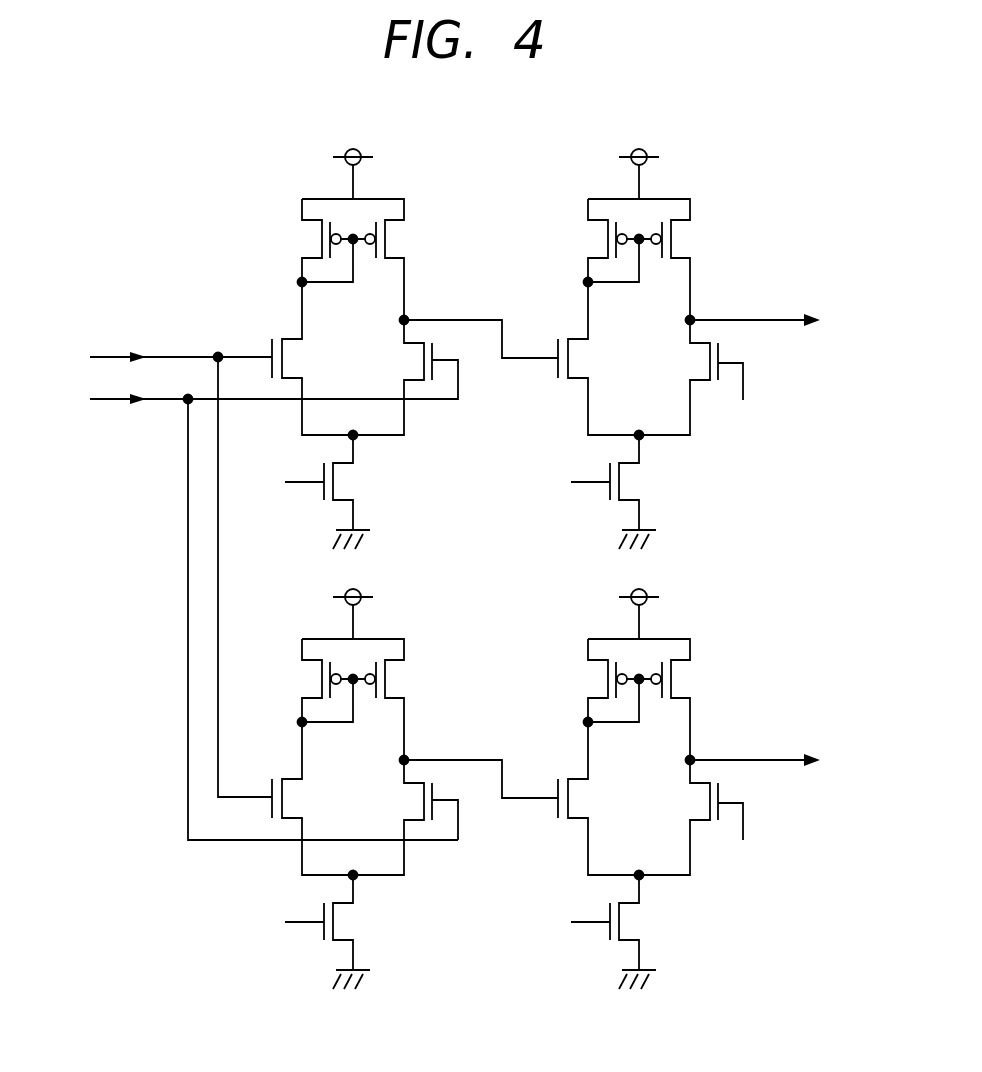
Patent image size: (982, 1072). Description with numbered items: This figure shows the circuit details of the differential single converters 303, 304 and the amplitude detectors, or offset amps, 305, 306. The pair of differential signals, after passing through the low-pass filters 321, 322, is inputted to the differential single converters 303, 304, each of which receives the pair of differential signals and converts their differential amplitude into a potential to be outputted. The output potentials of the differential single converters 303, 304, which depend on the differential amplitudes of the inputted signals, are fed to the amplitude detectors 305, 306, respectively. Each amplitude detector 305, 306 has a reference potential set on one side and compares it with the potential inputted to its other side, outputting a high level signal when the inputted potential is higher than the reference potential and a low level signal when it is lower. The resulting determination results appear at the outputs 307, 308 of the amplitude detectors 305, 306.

The differential single converter 303 is at (416, 207).
The differential single converter 304 is at (416, 647).
The amplitude detector (offset amp) 305 is at (702, 207).
The amplitude detector (offset amp) 306 is at (700, 647).
The first output terminal (FF) 307 is at (845, 303).
The second output terminal (FF) 308 is at (843, 747).
The low-pass filter (LPF) 321 is at (67, 340).
The low-pass filter (LPF) 322 is at (58, 415).